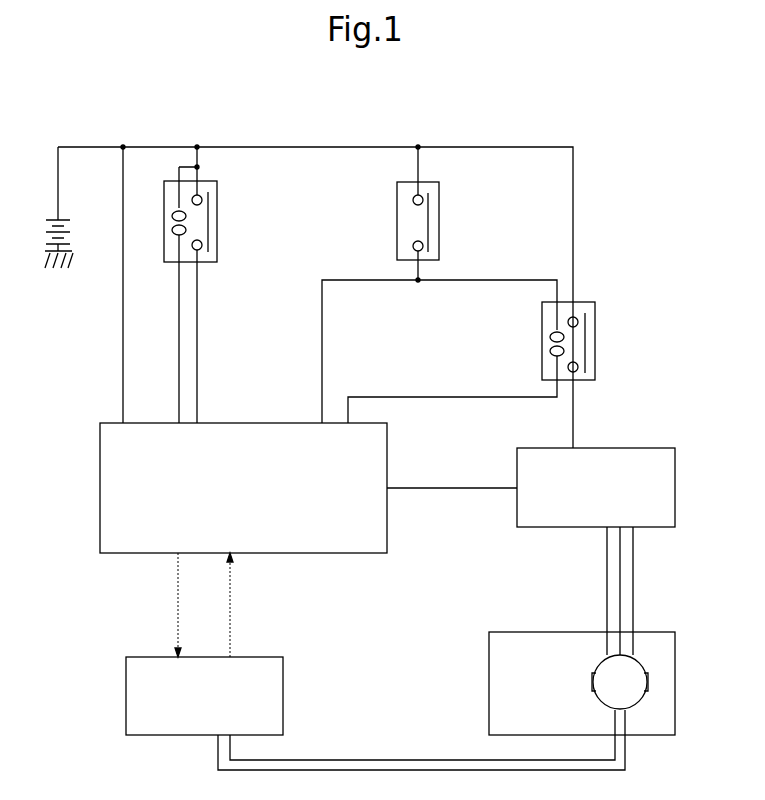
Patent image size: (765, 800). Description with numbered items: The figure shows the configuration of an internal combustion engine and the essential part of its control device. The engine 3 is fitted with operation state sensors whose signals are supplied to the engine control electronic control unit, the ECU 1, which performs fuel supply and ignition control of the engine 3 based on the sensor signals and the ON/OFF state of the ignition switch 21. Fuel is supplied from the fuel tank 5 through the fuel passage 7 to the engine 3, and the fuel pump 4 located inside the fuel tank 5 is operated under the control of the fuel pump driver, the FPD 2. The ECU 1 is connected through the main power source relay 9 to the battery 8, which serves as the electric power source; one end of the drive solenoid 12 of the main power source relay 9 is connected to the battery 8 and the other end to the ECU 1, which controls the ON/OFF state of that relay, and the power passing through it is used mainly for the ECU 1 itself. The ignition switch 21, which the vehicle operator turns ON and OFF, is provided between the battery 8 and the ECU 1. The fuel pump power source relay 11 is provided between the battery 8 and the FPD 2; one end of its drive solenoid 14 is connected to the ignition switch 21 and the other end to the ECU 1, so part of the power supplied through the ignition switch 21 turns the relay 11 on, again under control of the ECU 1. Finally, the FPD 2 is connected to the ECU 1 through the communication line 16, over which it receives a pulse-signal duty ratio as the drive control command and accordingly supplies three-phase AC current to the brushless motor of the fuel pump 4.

The engine control electronic control unit (ECU) 1 is at (228, 423).
The fuel pump driver (FPD) 2 is at (623, 448).
The internal combustion engine 3 is at (262, 657).
The fuel pump 4 is at (645, 673).
The fuel tank 5 is at (655, 632).
The fuel passage 7 is at (367, 760).
The battery 8 is at (56, 218).
The main power source relay 9 is at (193, 285).
The fuel pump power source relay 11 is at (492, 347).
The drive solenoid 12 is at (174, 212).
The drive solenoid 14 is at (548, 337).
The communication line 16 is at (452, 488).
The ignition switch 21 is at (429, 182).